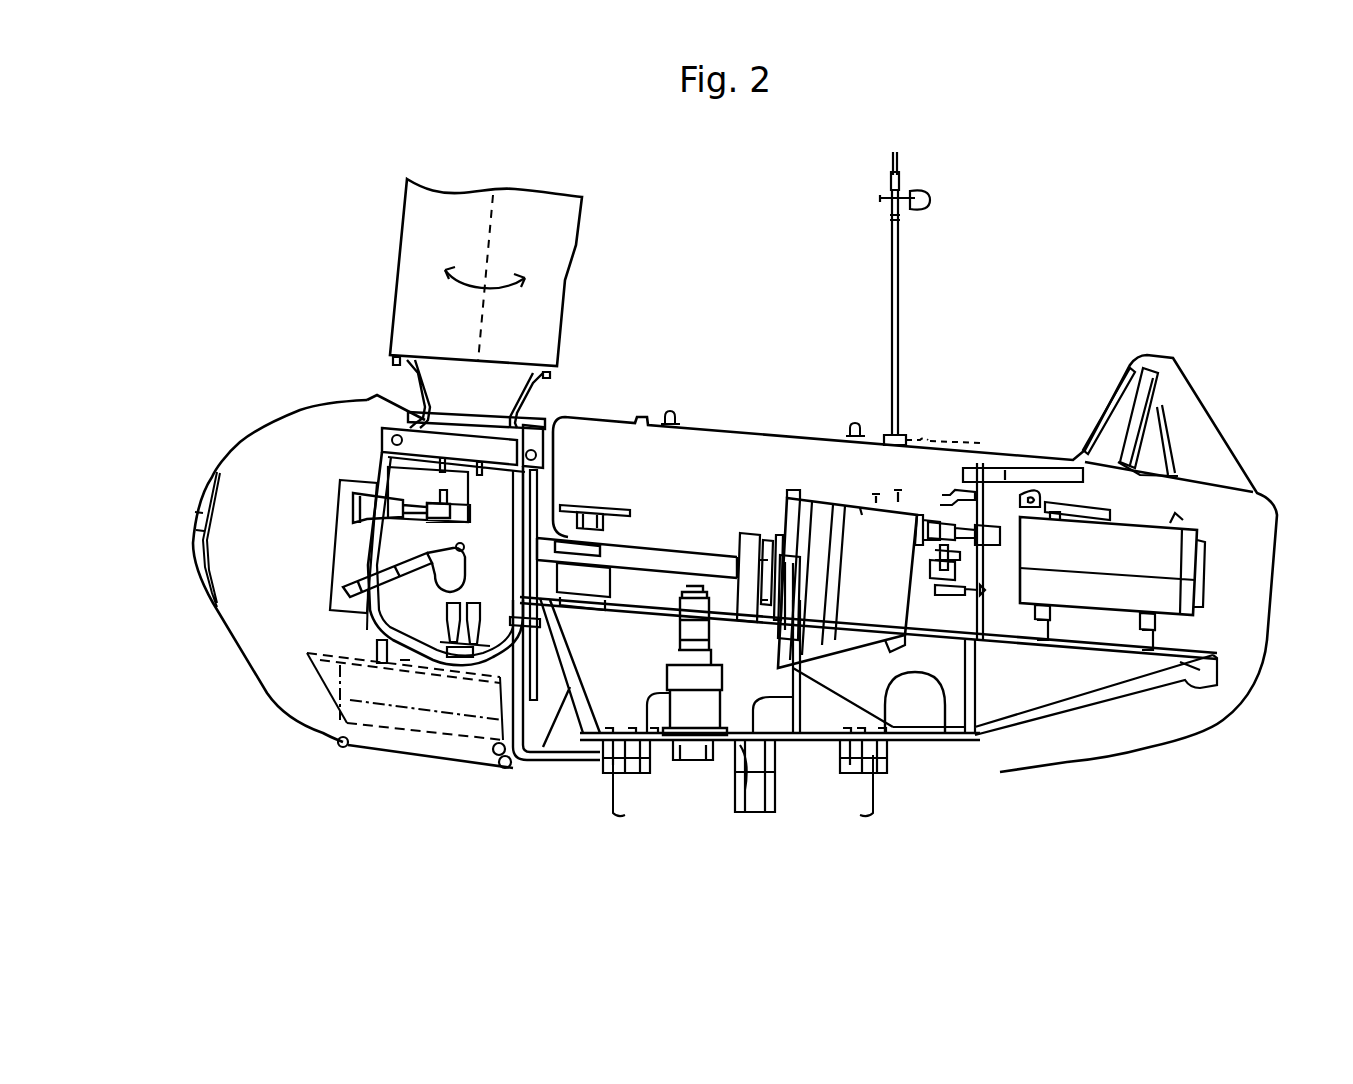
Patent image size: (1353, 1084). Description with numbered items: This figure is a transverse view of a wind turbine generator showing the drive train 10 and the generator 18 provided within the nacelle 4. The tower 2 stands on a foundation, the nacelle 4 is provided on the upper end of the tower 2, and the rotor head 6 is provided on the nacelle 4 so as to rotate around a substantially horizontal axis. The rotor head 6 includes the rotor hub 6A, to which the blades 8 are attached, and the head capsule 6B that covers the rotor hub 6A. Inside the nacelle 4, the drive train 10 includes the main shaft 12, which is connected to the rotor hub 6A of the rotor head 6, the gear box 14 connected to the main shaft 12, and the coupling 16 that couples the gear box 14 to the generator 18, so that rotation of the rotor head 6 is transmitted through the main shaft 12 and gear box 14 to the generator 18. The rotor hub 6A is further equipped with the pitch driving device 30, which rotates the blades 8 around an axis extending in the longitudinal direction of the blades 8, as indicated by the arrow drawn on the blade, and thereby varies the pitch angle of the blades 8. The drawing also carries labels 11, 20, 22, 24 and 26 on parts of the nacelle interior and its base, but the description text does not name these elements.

The tower 2 is at (873, 808).
The nacelle 4 is at (915, 556).
The rotor head 6 is at (334, 566).
The rotor hub 6A is at (367, 630).
The head capsule 6B is at (277, 707).
The blade 8 is at (417, 240).
The drive train 10 is at (733, 441).
The main bearing 11 is at (620, 527).
The main shaft 12 is at (652, 538).
The gear box 14 is at (858, 512).
The coupling 16 is at (987, 520).
The generator 18 is at (1145, 527).
The yaw system 20 is at (693, 811).
The yaw drive 22 is at (665, 683).
The yaw bearing 24 is at (715, 753).
The yaw brake 26 is at (657, 760).
The pitch driving device 30 is at (487, 535).